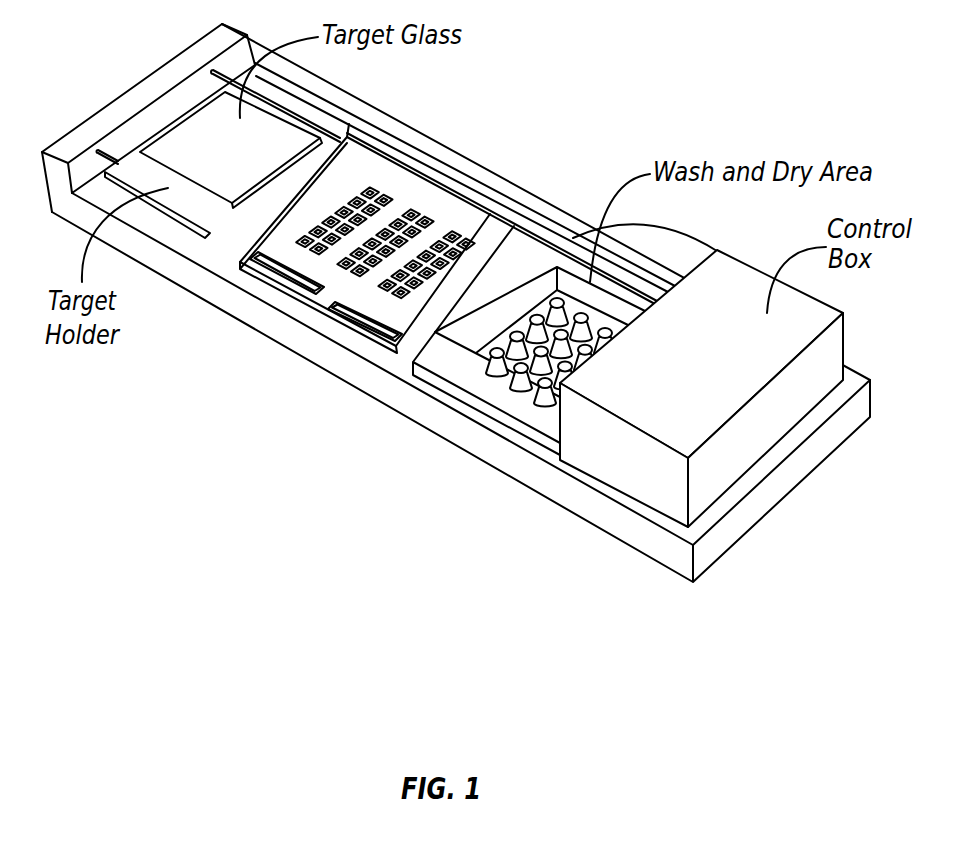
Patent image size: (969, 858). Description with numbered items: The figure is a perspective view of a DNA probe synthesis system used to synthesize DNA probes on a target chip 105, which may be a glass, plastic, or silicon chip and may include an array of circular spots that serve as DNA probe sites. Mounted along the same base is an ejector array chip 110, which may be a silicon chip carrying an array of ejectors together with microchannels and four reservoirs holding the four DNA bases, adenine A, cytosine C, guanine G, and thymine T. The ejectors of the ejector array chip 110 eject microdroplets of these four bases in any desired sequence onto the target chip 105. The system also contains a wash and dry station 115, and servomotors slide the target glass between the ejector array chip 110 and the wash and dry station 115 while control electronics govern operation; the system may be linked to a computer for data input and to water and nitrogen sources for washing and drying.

The target chip 105 is at (282, 140).
The ejector array chip 110 is at (378, 227).
The wash and dry station 115 is at (482, 377).
The adenine A is at (490, 232).
The cytosine C is at (387, 175).
The guanine G is at (285, 272).
The thymine T is at (362, 313).